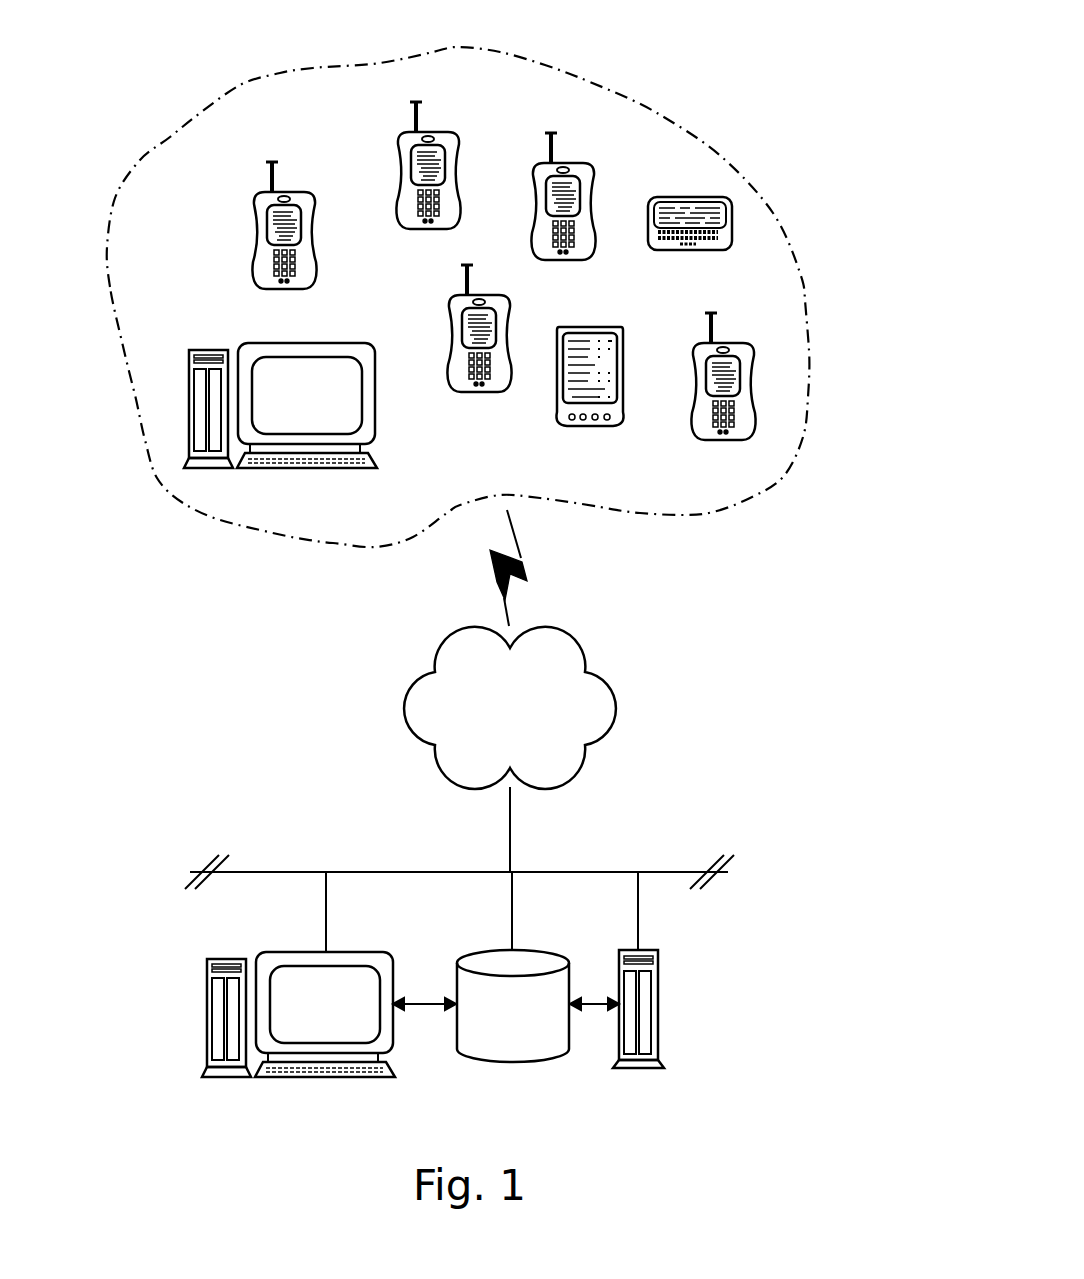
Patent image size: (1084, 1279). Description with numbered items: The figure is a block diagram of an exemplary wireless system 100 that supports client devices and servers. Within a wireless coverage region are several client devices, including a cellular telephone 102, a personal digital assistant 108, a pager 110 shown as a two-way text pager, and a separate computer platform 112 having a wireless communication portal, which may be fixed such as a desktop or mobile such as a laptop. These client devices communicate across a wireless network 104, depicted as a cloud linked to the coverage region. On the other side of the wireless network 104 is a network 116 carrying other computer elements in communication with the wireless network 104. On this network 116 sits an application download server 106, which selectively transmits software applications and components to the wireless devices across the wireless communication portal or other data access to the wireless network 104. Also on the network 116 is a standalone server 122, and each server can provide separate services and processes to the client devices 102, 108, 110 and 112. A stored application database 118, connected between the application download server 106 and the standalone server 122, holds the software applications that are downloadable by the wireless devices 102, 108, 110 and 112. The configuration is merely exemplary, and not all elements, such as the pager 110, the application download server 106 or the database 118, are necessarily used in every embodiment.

The wireless system 100 is at (749, 68).
The cellular telephone 102 is at (455, 131).
The wireless network 104 is at (615, 707).
The application download server 106 is at (295, 950).
The personal digital assistant 108 is at (557, 393).
The pager 110 is at (693, 251).
The separate computer platform 112 is at (305, 342).
The network 116 is at (293, 872).
The stored application database 118 is at (457, 1030).
The standalone server 122 is at (658, 1043).